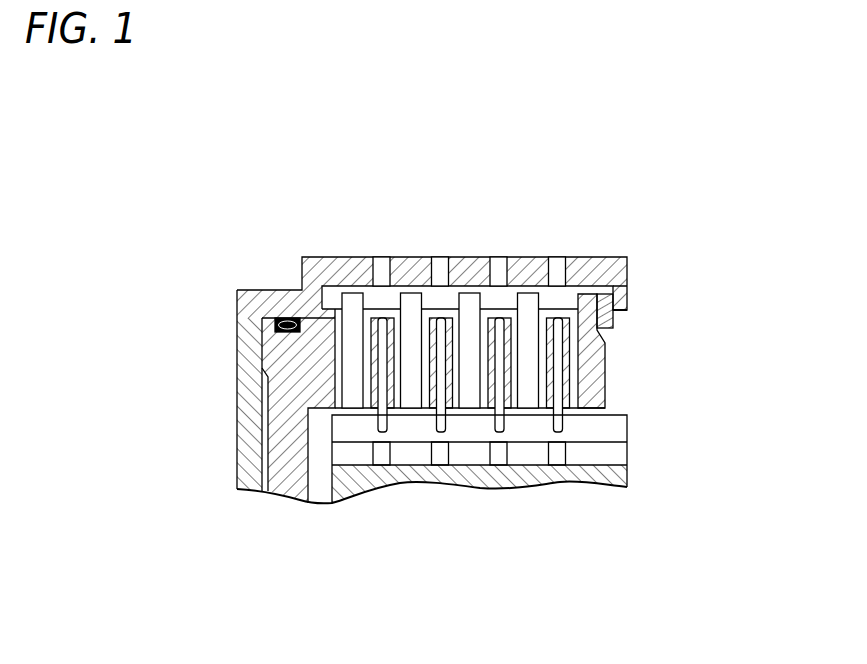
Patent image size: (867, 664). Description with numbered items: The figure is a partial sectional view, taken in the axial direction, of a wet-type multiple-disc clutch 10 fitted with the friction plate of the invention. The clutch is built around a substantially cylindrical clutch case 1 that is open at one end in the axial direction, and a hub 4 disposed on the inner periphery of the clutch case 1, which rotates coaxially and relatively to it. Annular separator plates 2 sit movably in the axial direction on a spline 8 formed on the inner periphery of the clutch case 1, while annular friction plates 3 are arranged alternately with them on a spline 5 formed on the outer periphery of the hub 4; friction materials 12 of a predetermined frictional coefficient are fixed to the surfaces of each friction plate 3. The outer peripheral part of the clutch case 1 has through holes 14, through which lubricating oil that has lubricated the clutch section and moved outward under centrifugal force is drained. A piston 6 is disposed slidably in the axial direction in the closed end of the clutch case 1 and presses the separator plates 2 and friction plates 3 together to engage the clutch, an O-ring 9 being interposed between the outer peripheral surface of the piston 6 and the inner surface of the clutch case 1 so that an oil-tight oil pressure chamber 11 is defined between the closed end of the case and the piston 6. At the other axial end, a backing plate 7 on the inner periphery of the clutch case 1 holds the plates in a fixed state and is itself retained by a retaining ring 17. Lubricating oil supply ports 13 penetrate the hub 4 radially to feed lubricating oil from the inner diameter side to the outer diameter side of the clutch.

The clutch case 1 is at (339, 257).
The separator plates 2 is at (530, 294).
The friction plates 3 is at (560, 373).
The hub 4 is at (625, 471).
The spline 5 is at (615, 425).
The piston 6 is at (262, 368).
The backing plate 7 is at (607, 360).
The spline 8 is at (622, 293).
The O-ring 9 is at (285, 318).
The wet-type multiple-disc clutch 10 is at (655, 229).
The oil pressure chamber 11 is at (268, 454).
The friction materials 12 is at (377, 412).
The lubricating oil supply ports 13 is at (497, 447).
The through holes 14 is at (498, 258).
The retaining ring 17 is at (617, 322).